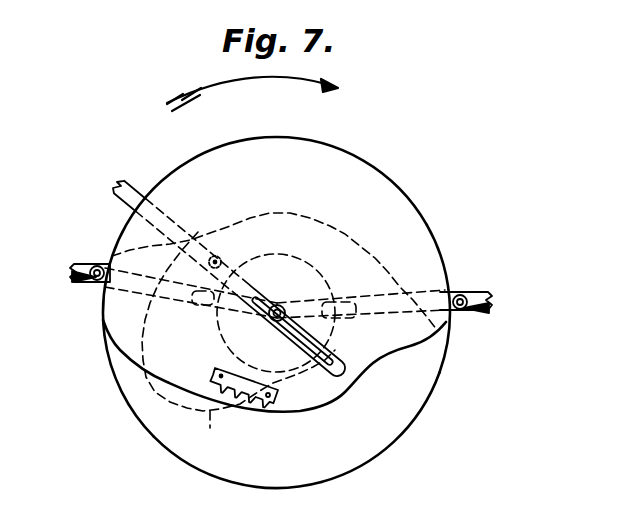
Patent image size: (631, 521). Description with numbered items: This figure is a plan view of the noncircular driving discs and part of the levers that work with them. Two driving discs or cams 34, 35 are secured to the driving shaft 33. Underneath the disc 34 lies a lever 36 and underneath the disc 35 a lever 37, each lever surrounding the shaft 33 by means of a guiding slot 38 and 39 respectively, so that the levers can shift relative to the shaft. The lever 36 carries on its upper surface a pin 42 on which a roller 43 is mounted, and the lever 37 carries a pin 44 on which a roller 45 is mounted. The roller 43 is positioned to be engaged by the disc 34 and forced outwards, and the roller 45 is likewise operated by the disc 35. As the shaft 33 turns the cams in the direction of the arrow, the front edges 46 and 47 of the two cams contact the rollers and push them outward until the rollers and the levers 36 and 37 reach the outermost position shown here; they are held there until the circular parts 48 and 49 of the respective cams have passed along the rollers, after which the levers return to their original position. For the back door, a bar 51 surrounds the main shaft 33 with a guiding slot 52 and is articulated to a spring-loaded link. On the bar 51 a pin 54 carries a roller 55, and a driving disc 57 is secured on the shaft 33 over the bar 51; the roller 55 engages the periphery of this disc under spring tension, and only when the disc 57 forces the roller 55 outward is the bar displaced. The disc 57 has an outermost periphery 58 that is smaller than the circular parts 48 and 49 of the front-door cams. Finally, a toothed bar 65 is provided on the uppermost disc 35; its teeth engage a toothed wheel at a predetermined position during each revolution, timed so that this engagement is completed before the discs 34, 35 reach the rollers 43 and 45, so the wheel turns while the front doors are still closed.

The driving shaft 33 is at (321, 271).
The driving disc or cam 34 is at (418, 400).
The driving disc or cam 35 is at (444, 247).
The lever 36 is at (78, 266).
The lever 37 is at (491, 297).
The guiding slot 38 is at (193, 307).
The guiding slot 39 is at (333, 300).
The pin 42 is at (104, 259).
The roller 43 is at (91, 282).
The pin 44 is at (462, 318).
The roller 45 is at (472, 278).
The front edge 46 is at (147, 248).
The front edge 47 is at (413, 347).
The circular part 48 is at (330, 483).
The circular part 49 is at (374, 167).
The bar 51 is at (132, 192).
The guiding slot 52 is at (330, 373).
The pin 54 is at (205, 280).
The roller 55 is at (224, 263).
The driving disc 57 is at (213, 429).
The outermost periphery 58 is at (157, 396).
The toothed bar 65 is at (240, 387).